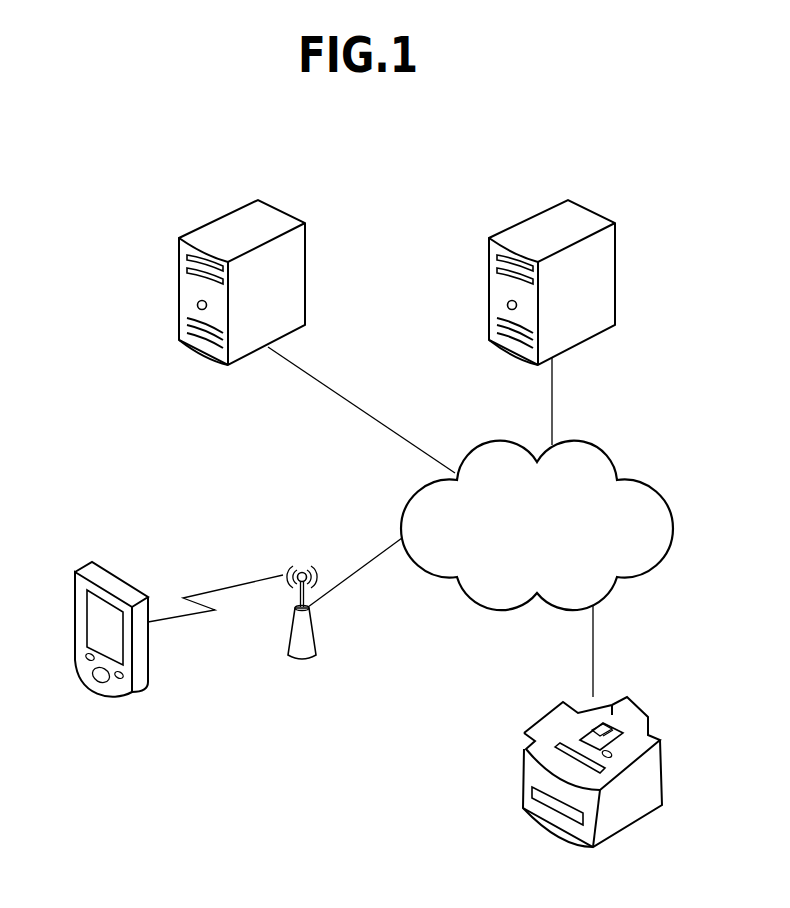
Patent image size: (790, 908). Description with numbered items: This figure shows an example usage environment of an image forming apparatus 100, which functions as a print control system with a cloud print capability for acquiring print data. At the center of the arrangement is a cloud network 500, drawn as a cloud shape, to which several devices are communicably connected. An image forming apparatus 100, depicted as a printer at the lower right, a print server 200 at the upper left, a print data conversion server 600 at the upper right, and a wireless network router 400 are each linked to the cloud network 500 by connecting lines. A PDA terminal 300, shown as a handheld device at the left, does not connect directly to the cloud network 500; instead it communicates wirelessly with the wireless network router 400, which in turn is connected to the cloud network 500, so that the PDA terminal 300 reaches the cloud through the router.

The image forming apparatus 100 is at (553, 833).
The print server 200 is at (278, 205).
The PDA terminal 300 is at (112, 570).
The wireless network router 400 is at (298, 664).
The cloud network 500 is at (497, 612).
The print data conversion server 600 is at (588, 205).